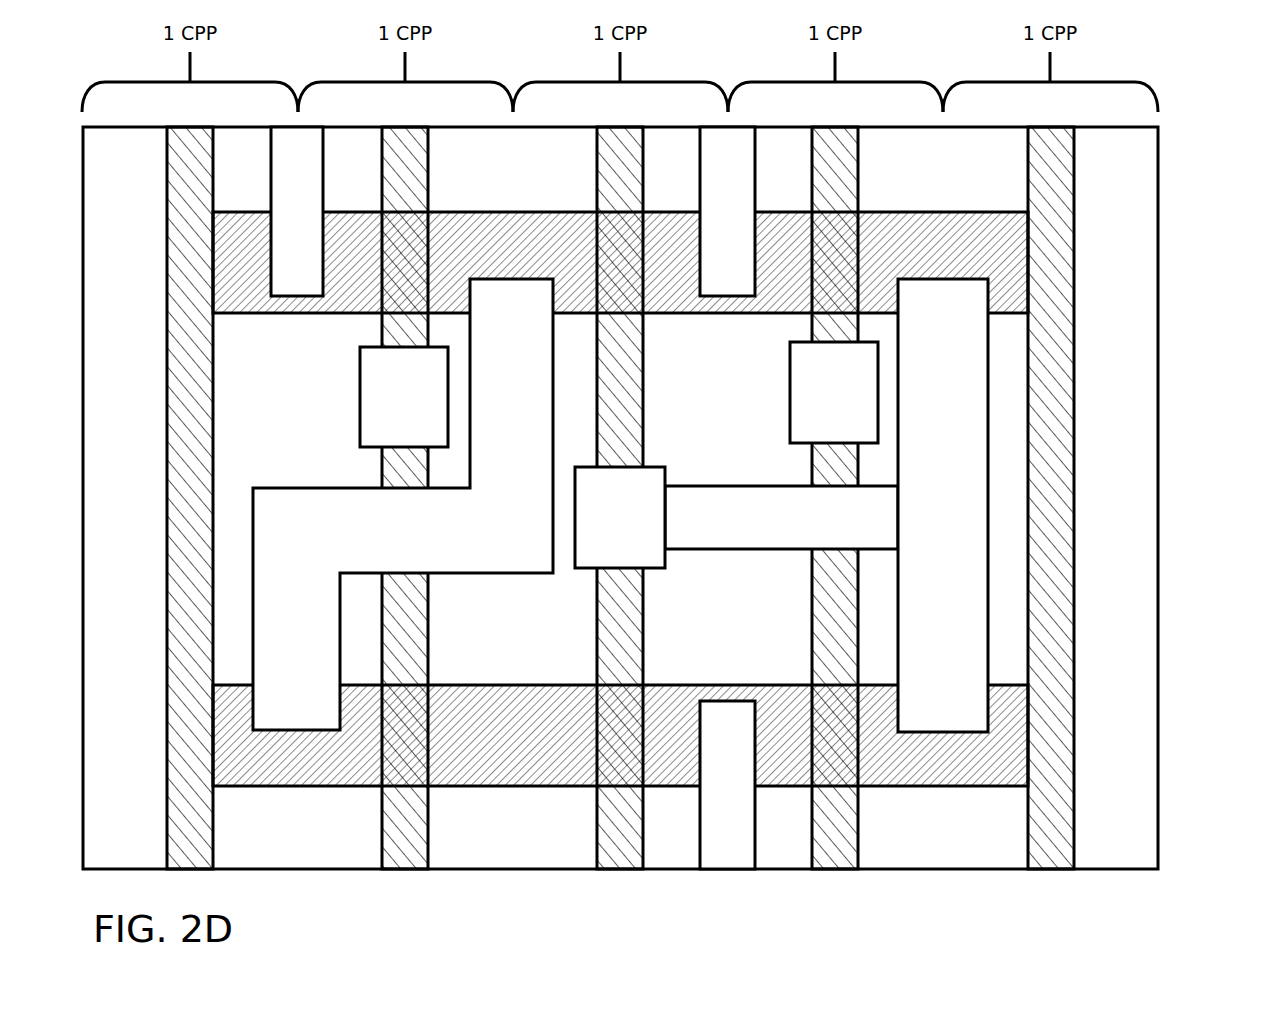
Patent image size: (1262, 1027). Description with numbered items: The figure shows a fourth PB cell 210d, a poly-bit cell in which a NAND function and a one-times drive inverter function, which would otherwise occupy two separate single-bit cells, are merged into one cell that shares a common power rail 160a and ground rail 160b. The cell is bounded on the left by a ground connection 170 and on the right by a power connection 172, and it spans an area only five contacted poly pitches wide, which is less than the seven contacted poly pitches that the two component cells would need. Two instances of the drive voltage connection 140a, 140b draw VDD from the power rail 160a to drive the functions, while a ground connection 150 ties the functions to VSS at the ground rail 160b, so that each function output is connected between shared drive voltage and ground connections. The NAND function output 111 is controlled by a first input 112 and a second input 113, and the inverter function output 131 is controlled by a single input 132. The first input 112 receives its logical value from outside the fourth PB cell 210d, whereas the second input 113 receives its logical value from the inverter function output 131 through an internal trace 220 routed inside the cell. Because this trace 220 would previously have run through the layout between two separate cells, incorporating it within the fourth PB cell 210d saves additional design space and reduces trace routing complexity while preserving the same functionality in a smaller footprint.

The fourth PB cell 210d is at (1160, 228).
The NAND function output 111 is at (388, 544).
The first input 112 is at (388, 409).
The second input 113 is at (604, 529).
The inverter function output 131 is at (927, 506).
The input 132 is at (818, 409).
The drive voltage connection 140a is at (303, 212).
The drive voltage connection 140b is at (738, 212).
The ground connection 150 is at (728, 850).
The power rail 160a is at (541, 212).
The ground rail 160b is at (540, 684).
The ground connection 170 is at (175, 458).
The power connection 172 is at (1073, 493).
The internal trace 220 is at (757, 528).